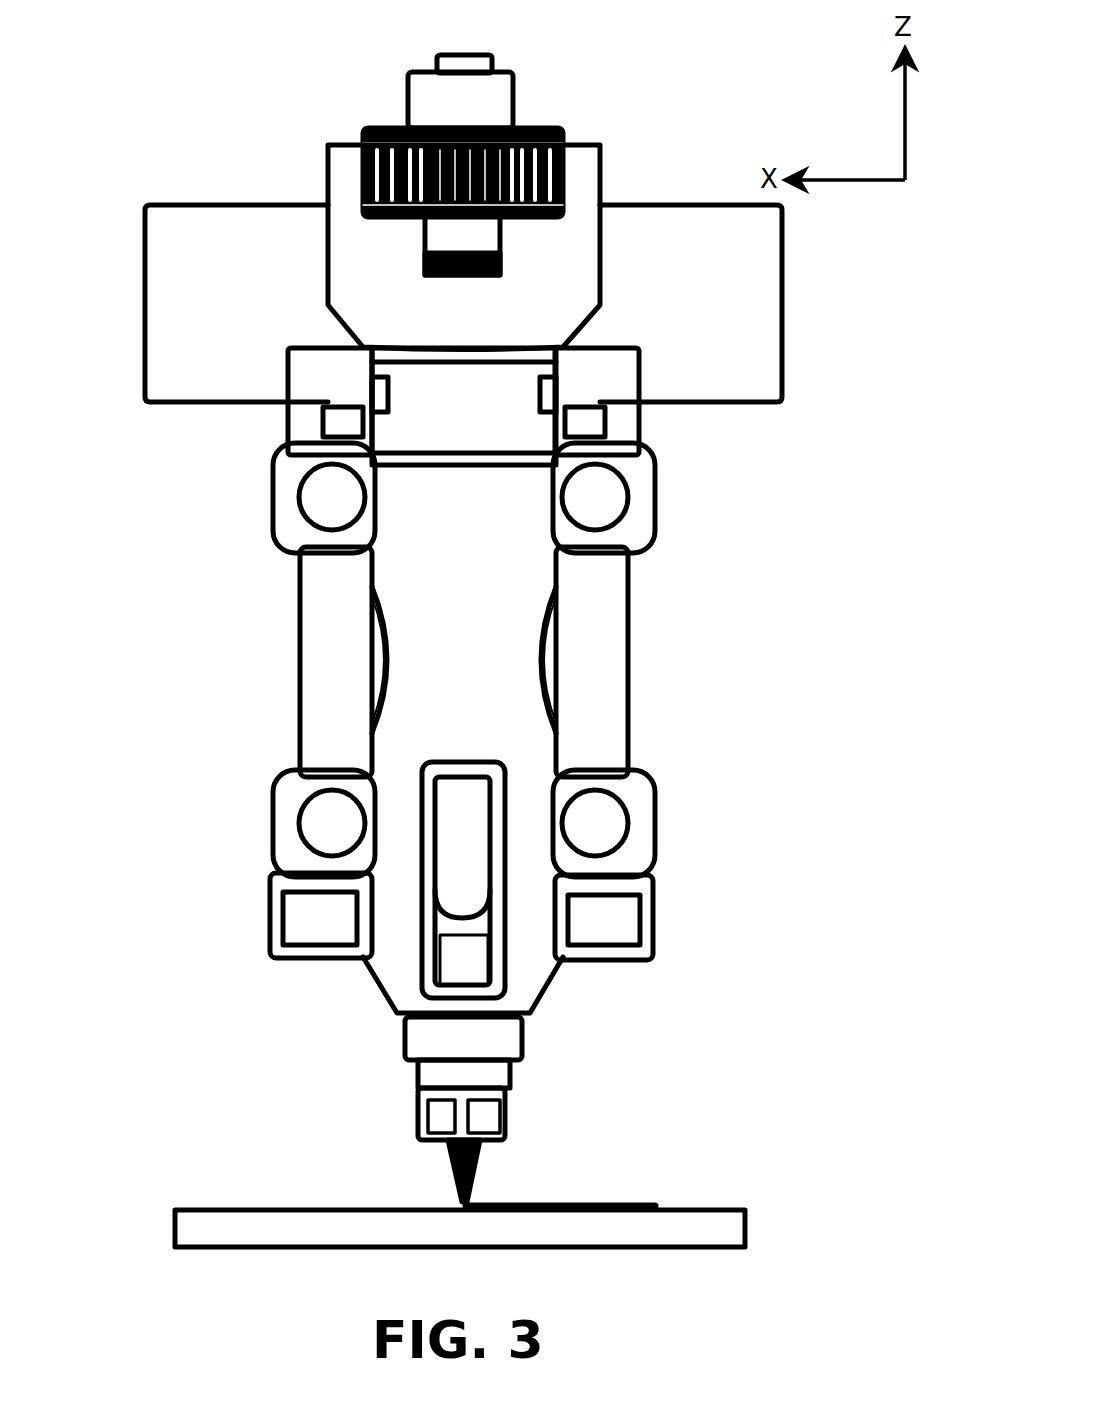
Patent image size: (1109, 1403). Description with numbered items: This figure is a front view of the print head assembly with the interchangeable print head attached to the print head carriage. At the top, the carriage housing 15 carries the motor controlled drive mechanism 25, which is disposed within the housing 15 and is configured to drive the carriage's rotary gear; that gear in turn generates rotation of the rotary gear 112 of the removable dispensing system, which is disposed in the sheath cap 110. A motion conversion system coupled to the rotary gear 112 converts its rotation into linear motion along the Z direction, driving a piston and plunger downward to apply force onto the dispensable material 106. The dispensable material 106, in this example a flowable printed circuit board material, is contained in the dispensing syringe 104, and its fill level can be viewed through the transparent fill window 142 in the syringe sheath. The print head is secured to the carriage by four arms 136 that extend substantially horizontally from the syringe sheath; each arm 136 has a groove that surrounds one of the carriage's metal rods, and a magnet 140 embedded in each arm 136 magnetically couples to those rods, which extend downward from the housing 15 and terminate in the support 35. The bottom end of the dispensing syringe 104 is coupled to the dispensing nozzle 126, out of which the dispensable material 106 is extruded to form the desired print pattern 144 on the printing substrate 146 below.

The housing 15 is at (698, 377).
The motor controlled drive mechanism 25 is at (483, 107).
The support 35 is at (617, 922).
The dispensing syringe 104 is at (350, 423).
The dispensable material 106 is at (447, 913).
The sheath cap 110 is at (355, 228).
The rotary gear 112 is at (380, 152).
The dispensing nozzle 126 is at (462, 1153).
The arms 136 is at (275, 490).
The magnet 140 is at (322, 503).
The transparent fill window 142 is at (423, 893).
The print pattern 144 is at (548, 1210).
The printing substrate 146 is at (725, 1218).